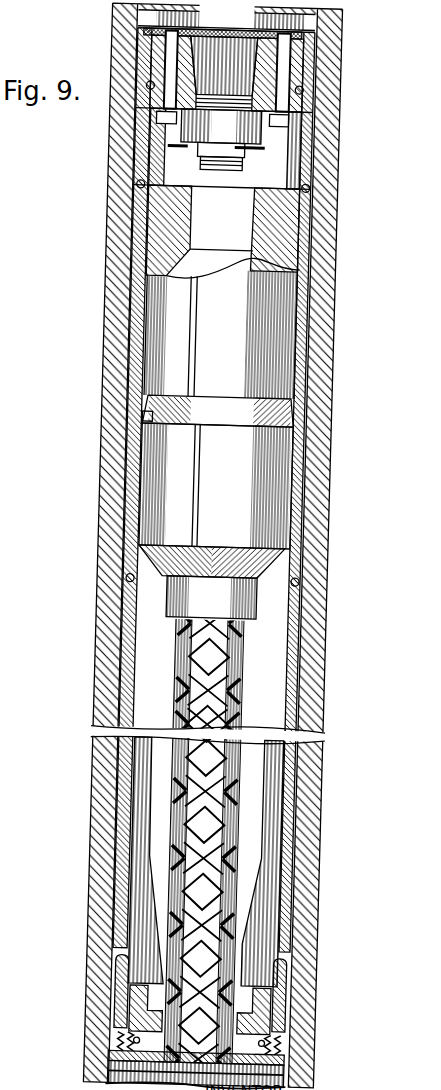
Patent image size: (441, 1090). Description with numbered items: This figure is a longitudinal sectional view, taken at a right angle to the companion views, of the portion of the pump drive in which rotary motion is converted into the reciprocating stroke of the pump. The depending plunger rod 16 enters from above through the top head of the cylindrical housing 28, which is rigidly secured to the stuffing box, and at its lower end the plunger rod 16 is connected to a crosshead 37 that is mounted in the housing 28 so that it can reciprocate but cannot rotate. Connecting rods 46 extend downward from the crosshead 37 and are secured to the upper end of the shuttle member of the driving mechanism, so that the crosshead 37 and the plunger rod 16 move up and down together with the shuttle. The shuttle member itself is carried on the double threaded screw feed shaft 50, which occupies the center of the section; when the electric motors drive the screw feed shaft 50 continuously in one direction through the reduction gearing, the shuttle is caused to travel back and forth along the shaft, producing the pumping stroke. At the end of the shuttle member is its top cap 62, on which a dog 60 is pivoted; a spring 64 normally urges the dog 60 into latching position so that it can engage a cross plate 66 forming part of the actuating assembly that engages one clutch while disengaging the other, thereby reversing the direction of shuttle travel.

The plunger rod 16 is at (227, 61).
The cylindrical housing 28 is at (109, 321).
The crosshead 37 is at (288, 74).
The connecting rods 46 is at (138, 464).
The double threaded screw feed shaft 50 is at (240, 797).
The dog 60 is at (132, 983).
The top cap 62 is at (304, 1073).
The spring 64 is at (131, 1051).
The cross plate 66 is at (286, 1025).